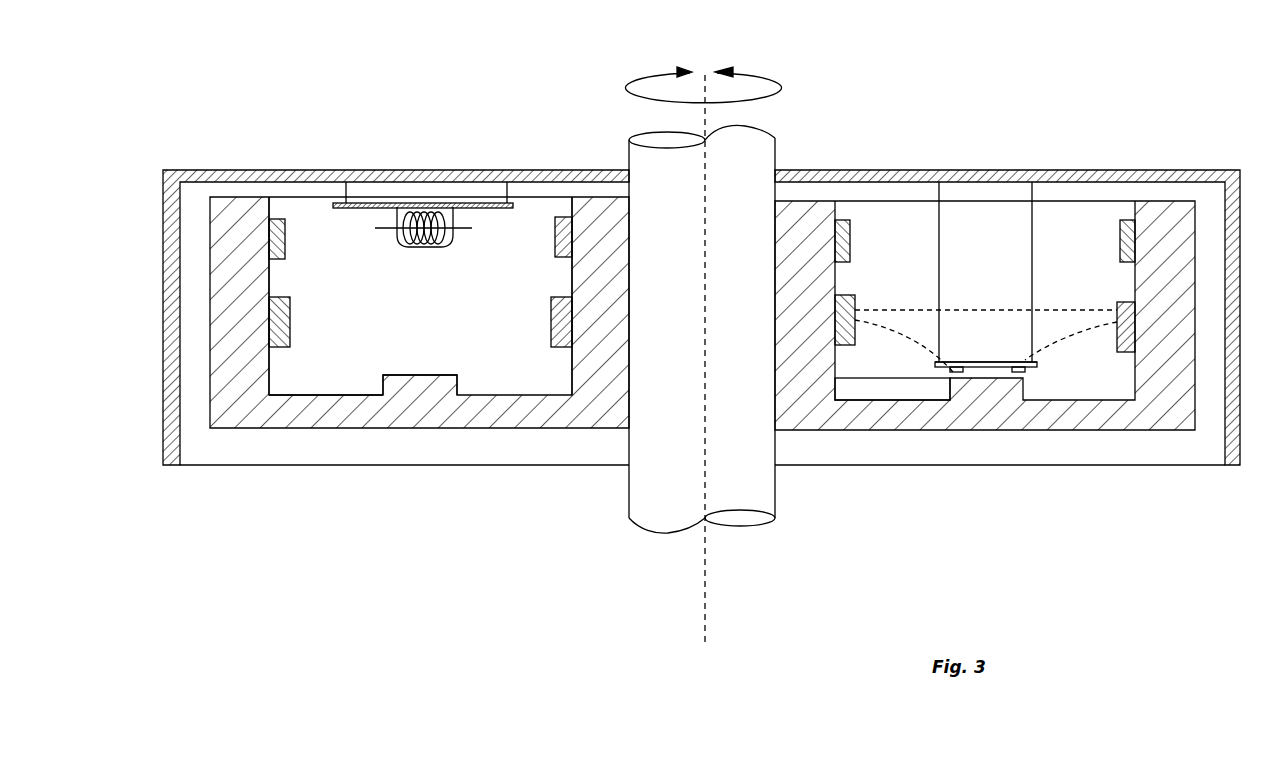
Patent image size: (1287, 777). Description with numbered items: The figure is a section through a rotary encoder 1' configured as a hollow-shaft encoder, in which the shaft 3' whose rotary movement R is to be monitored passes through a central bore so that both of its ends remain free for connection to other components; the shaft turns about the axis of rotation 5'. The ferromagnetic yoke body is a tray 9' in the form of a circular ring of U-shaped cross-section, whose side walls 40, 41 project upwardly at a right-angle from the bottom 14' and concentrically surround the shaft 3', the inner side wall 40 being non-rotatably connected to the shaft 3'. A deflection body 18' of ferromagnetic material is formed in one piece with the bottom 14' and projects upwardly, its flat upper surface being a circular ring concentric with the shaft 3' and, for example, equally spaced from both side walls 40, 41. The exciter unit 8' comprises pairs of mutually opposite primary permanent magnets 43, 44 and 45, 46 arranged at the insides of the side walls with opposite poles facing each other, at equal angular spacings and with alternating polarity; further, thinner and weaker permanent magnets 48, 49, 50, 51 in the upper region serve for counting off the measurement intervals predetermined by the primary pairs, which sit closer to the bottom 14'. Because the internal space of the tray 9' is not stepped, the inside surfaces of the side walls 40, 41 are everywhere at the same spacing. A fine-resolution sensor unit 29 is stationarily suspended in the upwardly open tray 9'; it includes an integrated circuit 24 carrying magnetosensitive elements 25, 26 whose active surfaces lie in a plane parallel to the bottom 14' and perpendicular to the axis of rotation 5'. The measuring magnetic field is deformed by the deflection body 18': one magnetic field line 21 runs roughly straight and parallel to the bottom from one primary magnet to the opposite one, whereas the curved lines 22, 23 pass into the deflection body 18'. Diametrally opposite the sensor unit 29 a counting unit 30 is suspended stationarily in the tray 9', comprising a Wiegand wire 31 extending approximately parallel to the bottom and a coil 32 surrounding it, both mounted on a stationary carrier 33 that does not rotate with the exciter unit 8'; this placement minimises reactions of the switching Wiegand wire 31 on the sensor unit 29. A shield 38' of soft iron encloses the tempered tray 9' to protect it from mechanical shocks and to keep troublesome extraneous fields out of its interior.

The rotary encoder 1' is at (701, 292).
The shaft 3' is at (702, 351).
The axis of rotation 5' is at (728, 360).
The exciter unit 8' is at (1028, 315).
The tray 9' is at (419, 359).
The bottom 14' is at (326, 378).
The deflection body 18' is at (420, 359).
The magnetic field line 21 is at (923, 309).
The curved magnetic field line 22 is at (910, 332).
The curved magnetic field line 23 is at (1047, 342).
The integrated circuit 24 is at (982, 362).
The magnetosensitive element 25 is at (950, 368).
The magnetosensitive element 26 is at (1028, 368).
The fine-resolution sensor unit 29 is at (995, 348).
The counting unit 30 is at (422, 250).
The Wiegand wire 31 is at (455, 237).
The coil 32 is at (402, 238).
The carrier 33 is at (337, 203).
The shield 38' is at (423, 164).
The inner side wall 40 is at (588, 275).
The side wall 41 is at (265, 277).
The primary permanent magnet 43 is at (850, 302).
The primary permanent magnet 44 is at (1122, 302).
The primary permanent magnet 45 is at (285, 313).
The primary permanent magnet 46 is at (562, 320).
The further permanent magnet 48 is at (850, 237).
The further permanent magnet 49 is at (1120, 248).
The further permanent magnet 50 is at (284, 223).
The further permanent magnet 51 is at (562, 232).
The direction of rotation R is at (758, 73).